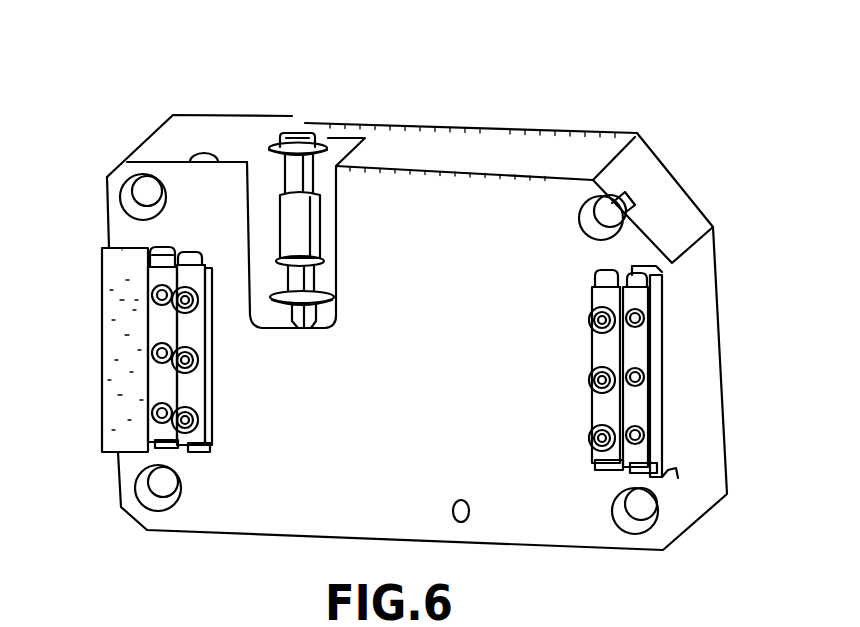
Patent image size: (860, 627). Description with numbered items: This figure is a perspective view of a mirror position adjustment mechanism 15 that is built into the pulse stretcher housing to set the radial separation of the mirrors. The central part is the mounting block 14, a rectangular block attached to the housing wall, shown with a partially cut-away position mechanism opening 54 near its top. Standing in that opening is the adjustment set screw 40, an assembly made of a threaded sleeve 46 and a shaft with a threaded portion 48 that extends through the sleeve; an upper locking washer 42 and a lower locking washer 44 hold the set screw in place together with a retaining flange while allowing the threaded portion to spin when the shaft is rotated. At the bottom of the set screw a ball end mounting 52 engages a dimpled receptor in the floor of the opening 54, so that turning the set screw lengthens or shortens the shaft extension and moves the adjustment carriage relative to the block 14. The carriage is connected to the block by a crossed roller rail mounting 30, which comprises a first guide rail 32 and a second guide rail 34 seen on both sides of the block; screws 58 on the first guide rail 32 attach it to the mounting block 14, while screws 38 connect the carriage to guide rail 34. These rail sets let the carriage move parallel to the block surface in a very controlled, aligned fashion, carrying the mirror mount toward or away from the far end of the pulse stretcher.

The mounting block 14 is at (515, 150).
The mirror position adjustment mechanism 15 is at (486, 112).
The crossed roller rail mounting 30 is at (407, 367).
The first guide rail 32 is at (407, 360).
The guide rail (slot assembly) 34 is at (190, 331).
The screws 38 is at (207, 417).
The adjustment set screw 40 is at (326, 106).
The upper locking washer 42 is at (280, 128).
The lower locking washer 44 is at (335, 296).
The threaded sleeve (collar) 46 is at (293, 220).
The threaded portion of the shaft 48 is at (300, 176).
The ball end mounting 52 is at (323, 342).
The position mechanism opening 54 is at (350, 231).
The screws 58 is at (158, 413).